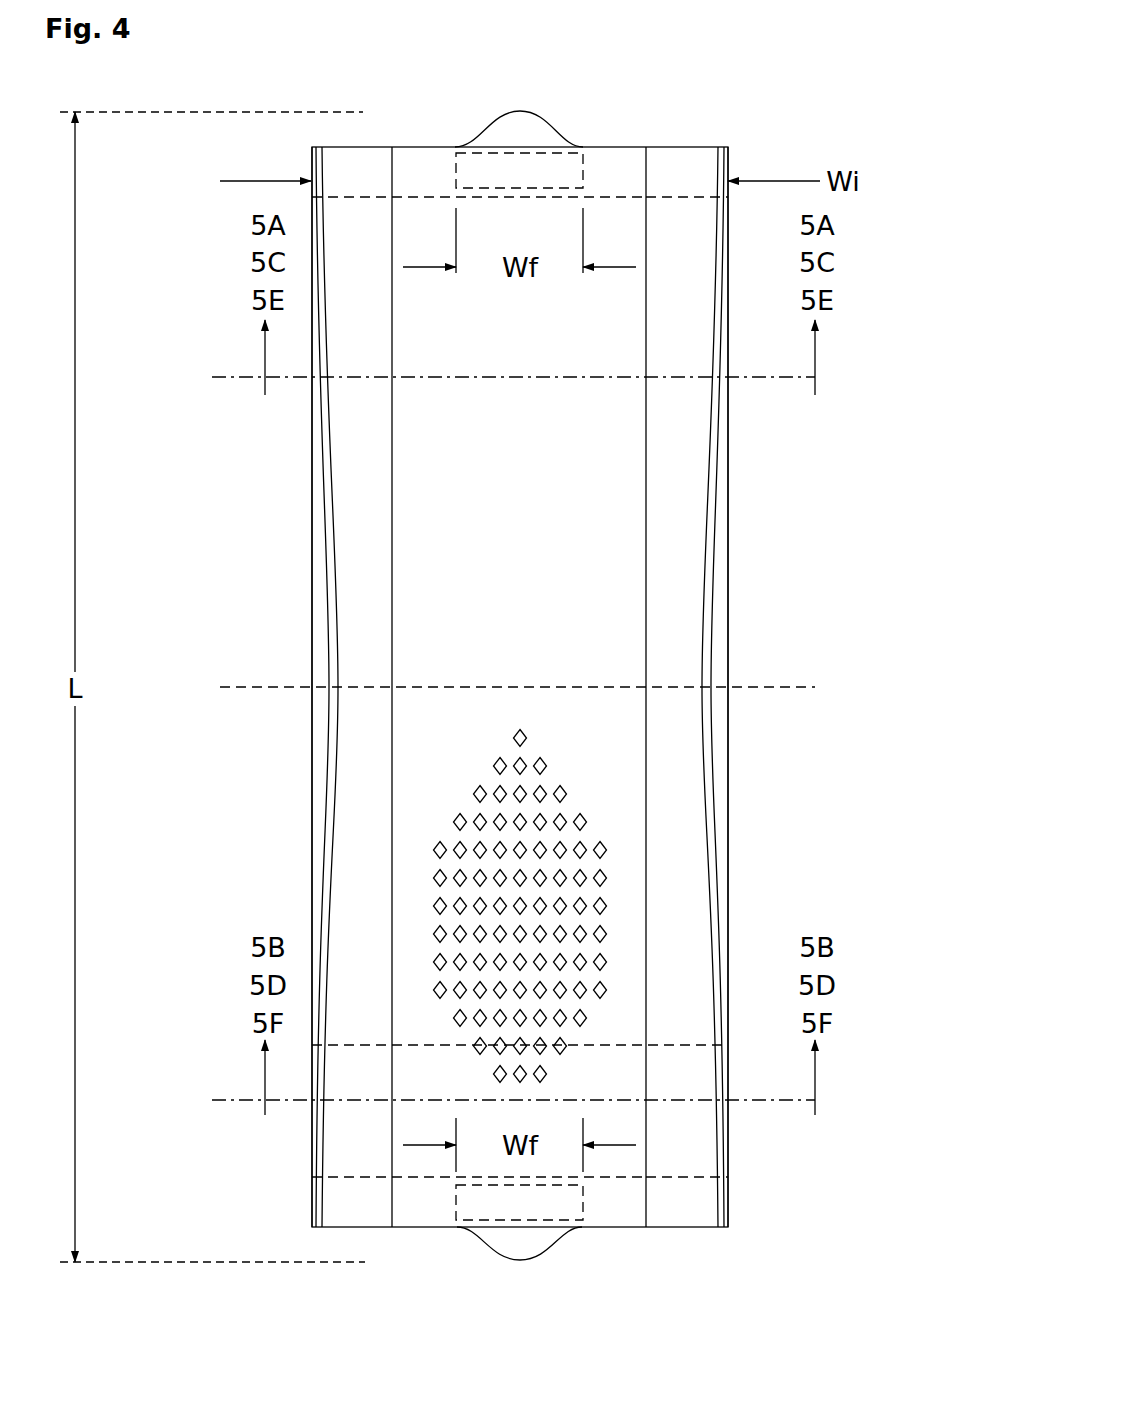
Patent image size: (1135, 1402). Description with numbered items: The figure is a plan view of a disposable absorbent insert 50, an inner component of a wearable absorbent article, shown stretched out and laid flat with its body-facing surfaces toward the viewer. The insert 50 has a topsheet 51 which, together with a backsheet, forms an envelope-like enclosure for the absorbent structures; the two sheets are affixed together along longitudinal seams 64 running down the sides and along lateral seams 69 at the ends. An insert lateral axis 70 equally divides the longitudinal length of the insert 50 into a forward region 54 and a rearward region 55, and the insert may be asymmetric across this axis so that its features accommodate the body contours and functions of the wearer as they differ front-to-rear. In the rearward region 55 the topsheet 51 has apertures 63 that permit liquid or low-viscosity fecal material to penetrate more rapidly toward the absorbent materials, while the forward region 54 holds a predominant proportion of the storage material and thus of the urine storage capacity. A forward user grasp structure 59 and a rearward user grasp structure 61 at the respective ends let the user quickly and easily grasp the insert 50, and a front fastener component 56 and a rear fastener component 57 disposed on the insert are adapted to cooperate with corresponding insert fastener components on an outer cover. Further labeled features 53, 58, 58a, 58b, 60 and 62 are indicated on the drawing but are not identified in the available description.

The disposable absorbent insert 50 is at (772, 590).
The topsheet 51 is at (615, 535).
The side flap 53 is at (365, 608).
The forward region 54 is at (295, 443).
The rearward region 55 is at (742, 942).
The front fastener component 56 is at (585, 162).
The rear fastener component 57 is at (573, 1208).
The leg elastic member 58 is at (511, 687).
The outer leg elastic 58a is at (328, 782).
The inner leg elastic 58b is at (337, 826).
The forward user grasp structure 59 is at (538, 128).
The front end portion 60 is at (620, 168).
The rearward user grasp structure 61 is at (495, 1262).
The rear end portion 62 is at (614, 1208).
The apertures 63 is at (606, 876).
The longitudinal seams 64 is at (325, 483).
The lateral seams 69 is at (375, 178).
The insert lateral axis 70 is at (535, 688).